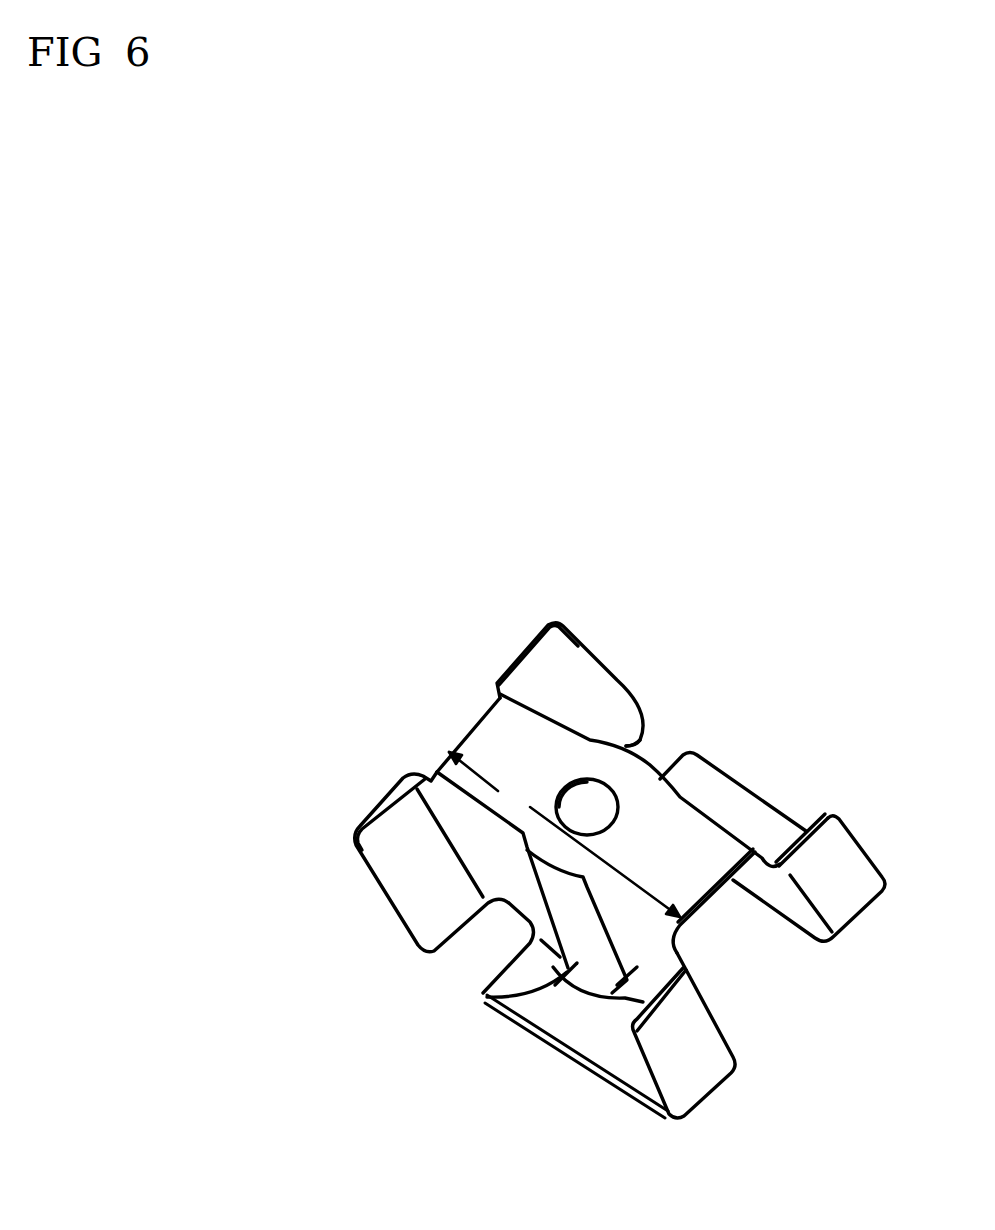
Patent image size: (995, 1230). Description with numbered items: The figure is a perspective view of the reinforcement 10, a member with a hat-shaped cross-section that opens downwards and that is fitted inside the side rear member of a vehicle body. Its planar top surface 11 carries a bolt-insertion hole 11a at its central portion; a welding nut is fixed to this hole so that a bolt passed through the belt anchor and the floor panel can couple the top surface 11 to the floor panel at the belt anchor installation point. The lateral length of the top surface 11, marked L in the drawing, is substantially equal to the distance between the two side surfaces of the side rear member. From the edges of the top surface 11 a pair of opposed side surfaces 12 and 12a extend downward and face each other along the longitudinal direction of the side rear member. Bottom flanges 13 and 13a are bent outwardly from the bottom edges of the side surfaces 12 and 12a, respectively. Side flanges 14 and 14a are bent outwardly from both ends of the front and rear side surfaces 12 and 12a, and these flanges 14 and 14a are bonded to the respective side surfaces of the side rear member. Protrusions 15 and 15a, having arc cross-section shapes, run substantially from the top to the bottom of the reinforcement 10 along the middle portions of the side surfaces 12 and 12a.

The reinforcement 10 is at (742, 638).
The top surface 11 is at (680, 873).
The bolt-insertion hole 11a is at (580, 797).
The side surface 12 is at (622, 997).
The side surface 12a is at (698, 806).
The bottom flange 13 is at (530, 1023).
The bottom flange 13a is at (780, 820).
The side flange 14 is at (850, 907).
The side flange 14a is at (567, 652).
The protrusion 15 is at (487, 997).
The protrusion 15a is at (640, 752).